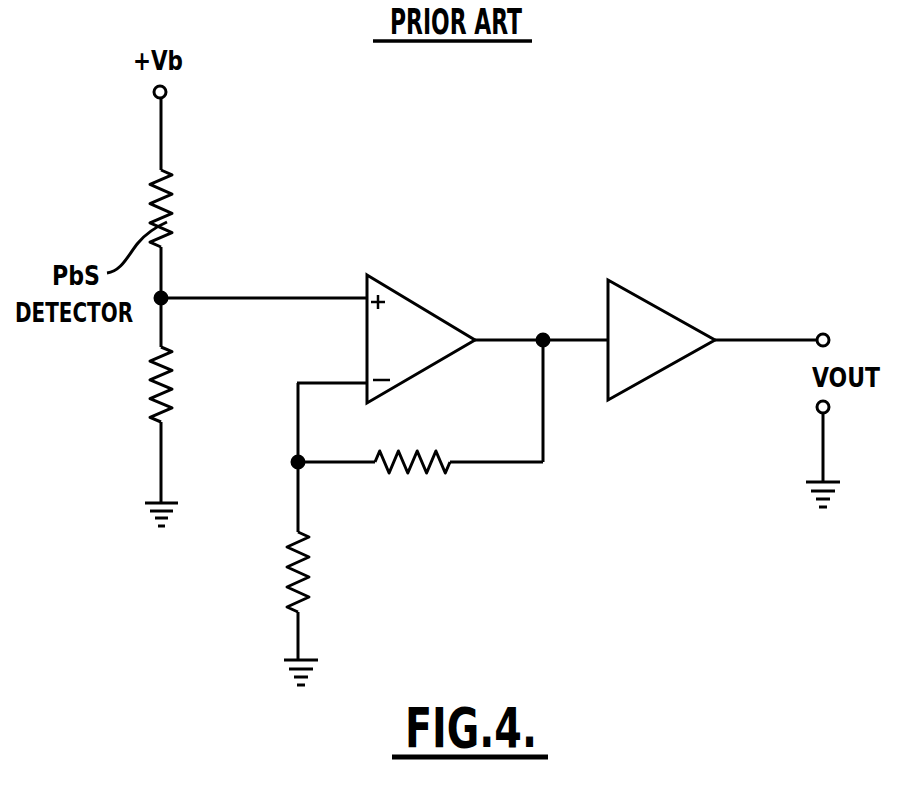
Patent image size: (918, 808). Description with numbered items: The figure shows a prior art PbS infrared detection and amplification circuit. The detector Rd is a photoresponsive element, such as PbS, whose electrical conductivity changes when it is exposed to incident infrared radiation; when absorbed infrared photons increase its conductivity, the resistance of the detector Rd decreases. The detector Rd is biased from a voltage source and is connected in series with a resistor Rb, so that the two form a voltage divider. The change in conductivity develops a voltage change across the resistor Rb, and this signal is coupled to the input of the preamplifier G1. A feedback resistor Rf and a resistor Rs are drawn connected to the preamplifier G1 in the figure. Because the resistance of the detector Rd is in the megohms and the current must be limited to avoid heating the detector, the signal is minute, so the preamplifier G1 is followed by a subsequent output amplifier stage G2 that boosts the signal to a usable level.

The detector Rd is at (182, 208).
The resistor Rb is at (182, 384).
The feedback resistor Rf is at (412, 482).
The source/gain-setting resistor Rs is at (277, 572).
The preamplifier G1 is at (418, 305).
The output amplifier G2 is at (661, 309).